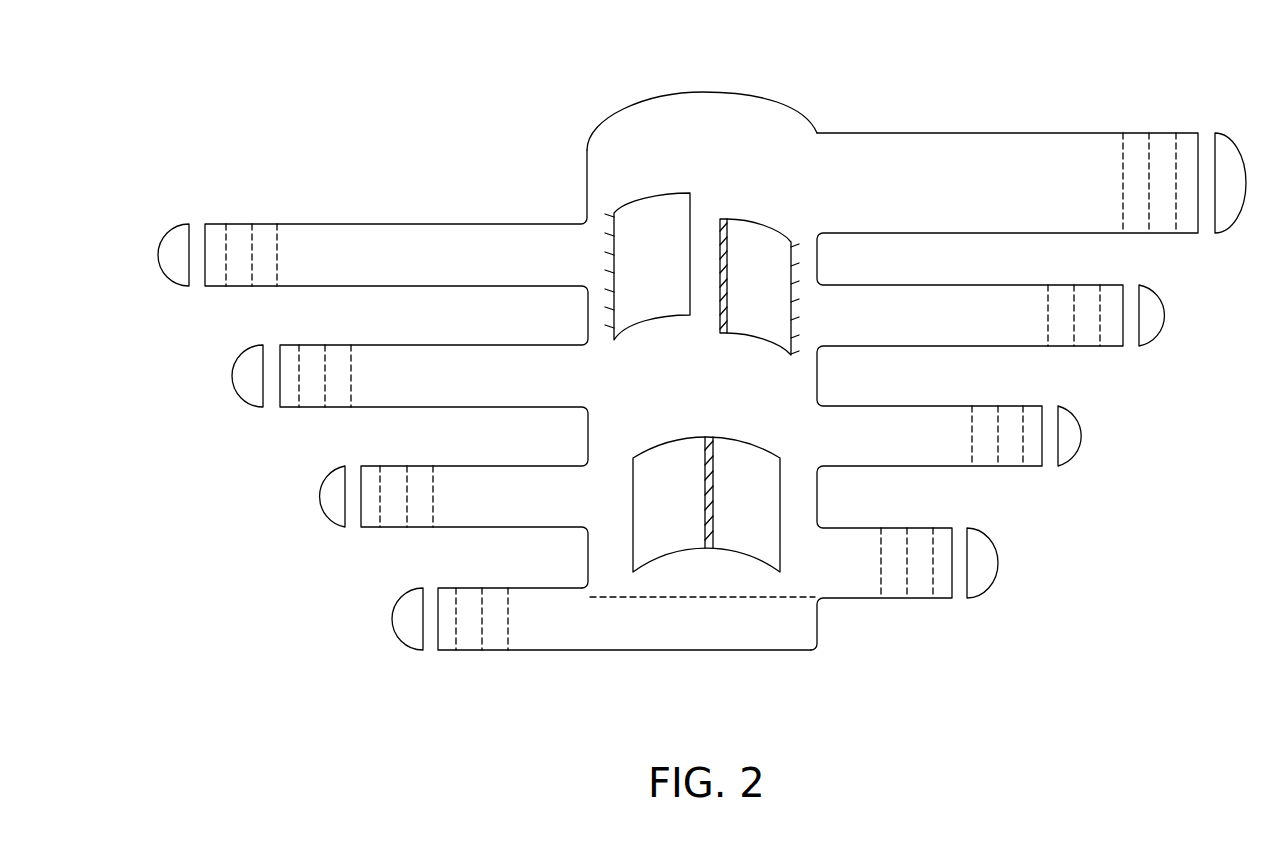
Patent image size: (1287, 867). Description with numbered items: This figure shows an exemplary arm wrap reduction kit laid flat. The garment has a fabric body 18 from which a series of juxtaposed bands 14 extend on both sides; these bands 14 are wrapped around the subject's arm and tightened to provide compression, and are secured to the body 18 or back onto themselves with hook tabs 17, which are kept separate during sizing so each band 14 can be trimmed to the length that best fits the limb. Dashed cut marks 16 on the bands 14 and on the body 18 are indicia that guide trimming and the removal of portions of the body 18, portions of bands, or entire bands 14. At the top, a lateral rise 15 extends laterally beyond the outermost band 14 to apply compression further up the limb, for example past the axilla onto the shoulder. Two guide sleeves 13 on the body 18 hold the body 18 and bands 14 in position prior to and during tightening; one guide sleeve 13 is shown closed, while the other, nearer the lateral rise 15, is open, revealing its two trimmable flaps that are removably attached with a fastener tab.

The guide sleeve 13 is at (758, 221).
The band 14 is at (963, 198).
The lateral rise 15 is at (755, 95).
The cut marks 16 is at (268, 233).
The hook tab 17 is at (1218, 132).
The body 18 is at (580, 630).